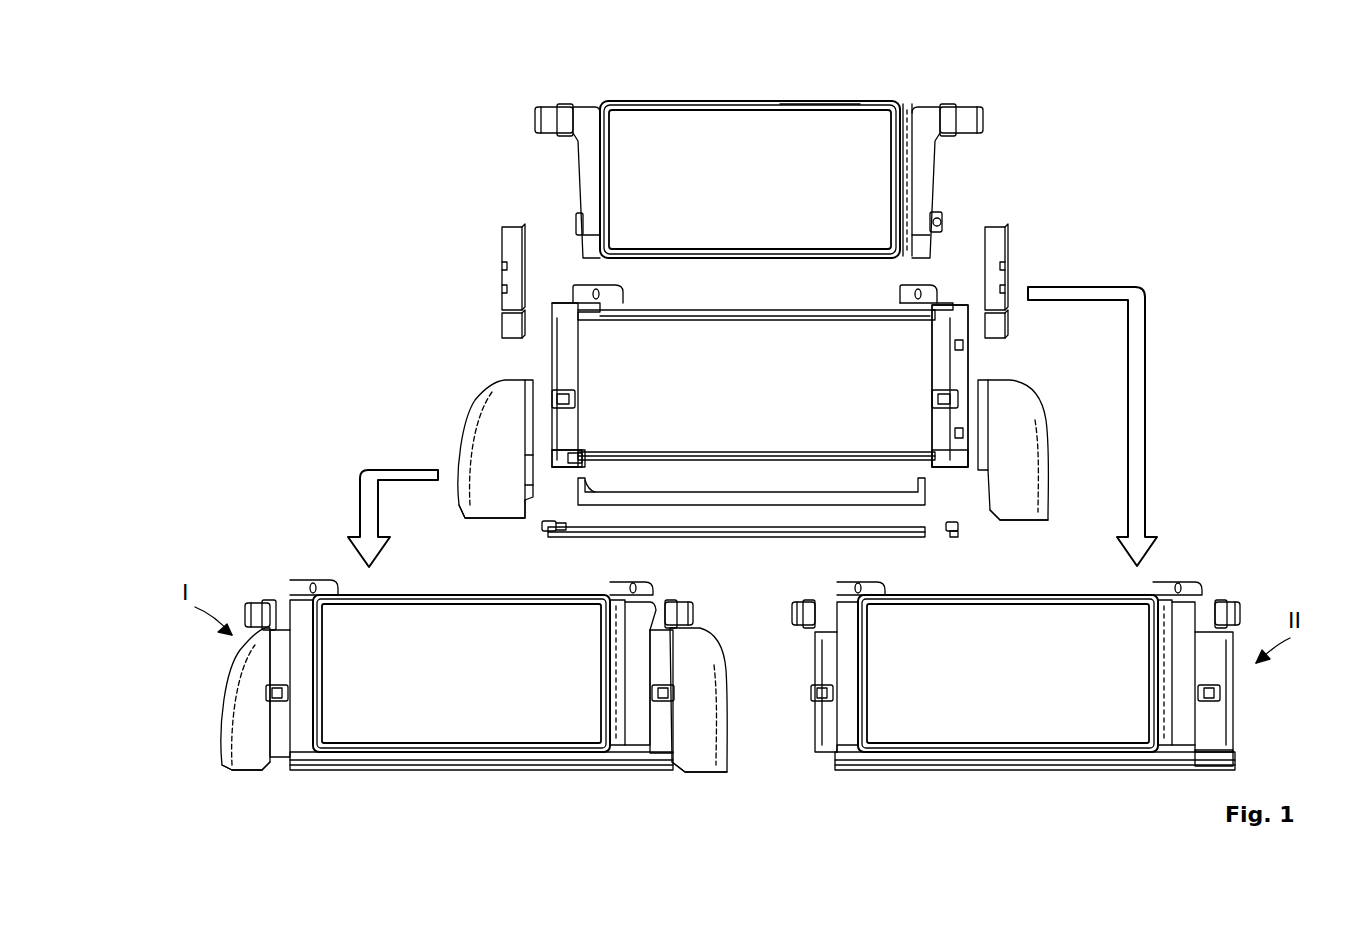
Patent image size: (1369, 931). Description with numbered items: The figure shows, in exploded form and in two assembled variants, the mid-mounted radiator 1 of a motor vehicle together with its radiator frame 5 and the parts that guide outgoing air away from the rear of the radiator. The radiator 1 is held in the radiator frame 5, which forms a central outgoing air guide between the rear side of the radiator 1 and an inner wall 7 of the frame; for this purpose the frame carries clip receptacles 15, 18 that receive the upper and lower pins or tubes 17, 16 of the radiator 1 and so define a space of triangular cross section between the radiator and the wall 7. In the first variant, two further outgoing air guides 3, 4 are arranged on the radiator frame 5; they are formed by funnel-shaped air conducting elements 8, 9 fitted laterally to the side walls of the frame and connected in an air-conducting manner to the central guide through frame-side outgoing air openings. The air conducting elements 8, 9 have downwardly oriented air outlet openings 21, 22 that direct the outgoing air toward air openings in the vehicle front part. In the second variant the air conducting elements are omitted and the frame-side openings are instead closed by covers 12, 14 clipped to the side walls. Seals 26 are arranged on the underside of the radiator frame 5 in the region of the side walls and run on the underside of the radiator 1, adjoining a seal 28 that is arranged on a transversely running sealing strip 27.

The mid-mounted radiator 1 is at (745, 128).
The outgoing air guide 3 is at (361, 551).
The outgoing air guide 4 is at (878, 561).
The radiator frame 5 is at (920, 368).
The inner wall of the radiator frame 7 is at (752, 404).
The funnel-shaped air conducting element 8 is at (485, 412).
The funnel-shaped air conducting element 9 is at (1044, 440).
The cover 12 is at (503, 268).
The cover 14 is at (1006, 270).
The clip receptacle 15 is at (566, 312).
The lower pin or tube 16 is at (945, 222).
The upper pin or tube 17 is at (565, 108).
The clip receptacle 18 is at (580, 430).
The air outlet opening 21 is at (1020, 520).
The air outlet opening 22 is at (483, 518).
The seal 26 is at (550, 531).
The sealing strip 27 is at (714, 505).
The seal 28 is at (756, 537).